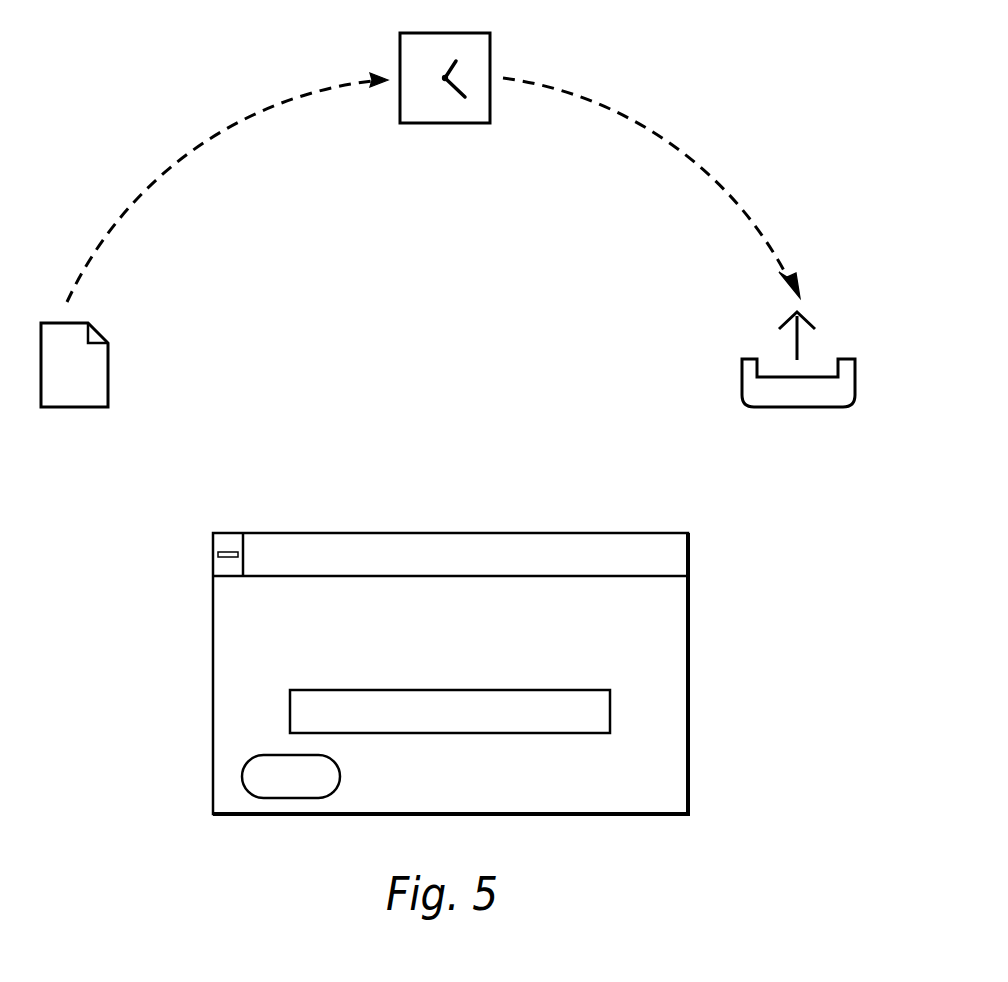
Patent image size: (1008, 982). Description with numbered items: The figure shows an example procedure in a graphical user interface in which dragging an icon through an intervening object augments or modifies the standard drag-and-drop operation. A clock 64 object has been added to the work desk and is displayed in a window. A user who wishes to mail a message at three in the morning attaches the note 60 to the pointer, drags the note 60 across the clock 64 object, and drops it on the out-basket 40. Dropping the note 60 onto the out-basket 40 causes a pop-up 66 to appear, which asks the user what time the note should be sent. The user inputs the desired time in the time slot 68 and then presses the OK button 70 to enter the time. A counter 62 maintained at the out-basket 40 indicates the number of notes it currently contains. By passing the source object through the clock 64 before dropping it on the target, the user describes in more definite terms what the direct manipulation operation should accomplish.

The out-basket 40 is at (742, 381).
The note 60 is at (108, 360).
The counter 62 is at (863, 340).
The clock 64 is at (490, 52).
The pop-up 66 is at (690, 628).
The time slot 68 is at (557, 722).
The OK button 70 is at (288, 790).